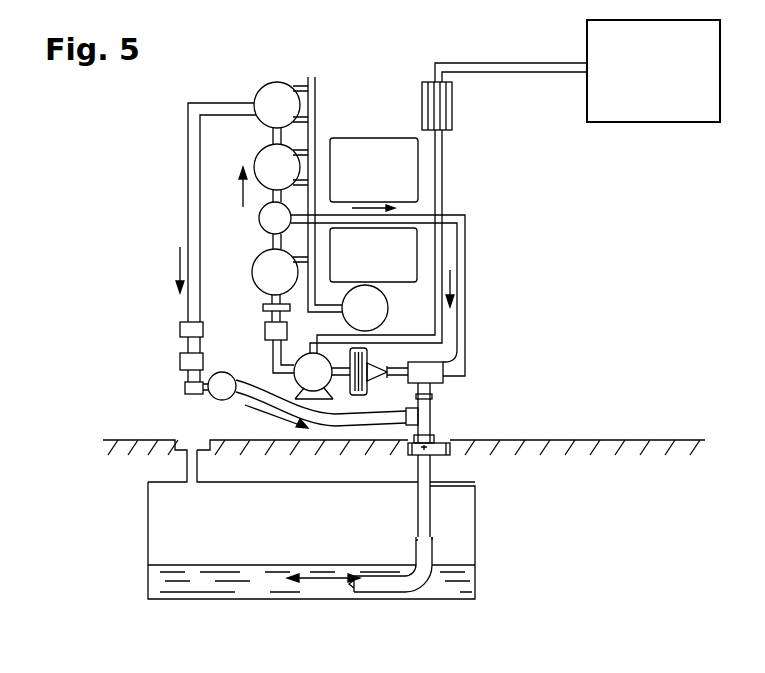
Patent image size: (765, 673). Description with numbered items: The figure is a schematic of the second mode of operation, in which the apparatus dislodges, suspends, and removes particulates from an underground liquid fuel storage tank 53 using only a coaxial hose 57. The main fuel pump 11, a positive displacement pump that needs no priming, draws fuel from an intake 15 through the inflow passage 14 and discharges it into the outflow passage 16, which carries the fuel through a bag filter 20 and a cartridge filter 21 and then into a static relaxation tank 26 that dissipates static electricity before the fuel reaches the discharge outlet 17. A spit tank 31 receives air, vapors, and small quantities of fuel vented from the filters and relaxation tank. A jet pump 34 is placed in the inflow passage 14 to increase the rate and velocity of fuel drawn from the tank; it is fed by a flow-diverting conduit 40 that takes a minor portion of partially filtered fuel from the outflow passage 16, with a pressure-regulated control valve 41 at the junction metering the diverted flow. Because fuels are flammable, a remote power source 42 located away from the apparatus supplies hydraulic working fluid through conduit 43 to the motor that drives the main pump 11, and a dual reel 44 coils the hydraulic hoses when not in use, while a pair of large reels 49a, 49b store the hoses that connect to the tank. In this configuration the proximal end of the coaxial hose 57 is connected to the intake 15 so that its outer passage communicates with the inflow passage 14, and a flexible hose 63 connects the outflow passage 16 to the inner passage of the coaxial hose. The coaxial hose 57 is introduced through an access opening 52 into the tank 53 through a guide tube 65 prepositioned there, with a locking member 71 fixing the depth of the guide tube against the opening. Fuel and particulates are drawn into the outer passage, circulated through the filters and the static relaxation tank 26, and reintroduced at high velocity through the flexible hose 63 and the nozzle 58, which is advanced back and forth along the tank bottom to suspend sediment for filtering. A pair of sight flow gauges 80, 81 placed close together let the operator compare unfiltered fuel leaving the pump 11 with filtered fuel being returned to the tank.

The main fuel pump 11 is at (305, 382).
The inflow passage 14 is at (433, 391).
The intake 15 is at (440, 412).
The outflow passage 16 is at (188, 163).
The discharge outlet 17 is at (185, 390).
The bag filter 20 is at (263, 284).
The cartridge filter 21 is at (265, 179).
The static relaxation tank 26 is at (265, 117).
The spit tank 31 is at (353, 320).
The jet pump 34 is at (447, 362).
The flow-diverting conduit 40 is at (470, 266).
The control valve 41 is at (263, 224).
The remote power source 42 is at (688, 108).
The conduit 43 is at (508, 73).
The dual reel 44 is at (452, 116).
The reel 49a is at (355, 183).
The reel 49b is at (355, 268).
The access opening 52 is at (413, 440).
The underground liquid fuel storage tank 53 is at (178, 600).
The coaxial hose 57 is at (398, 596).
The nozzle 58 is at (351, 596).
The flexible hose 63 is at (334, 405).
The guide tube 65 is at (431, 505).
The locking member 71 is at (452, 448).
The sight flow gauge 80 is at (265, 330).
The sight flow gauge 81 is at (180, 358).